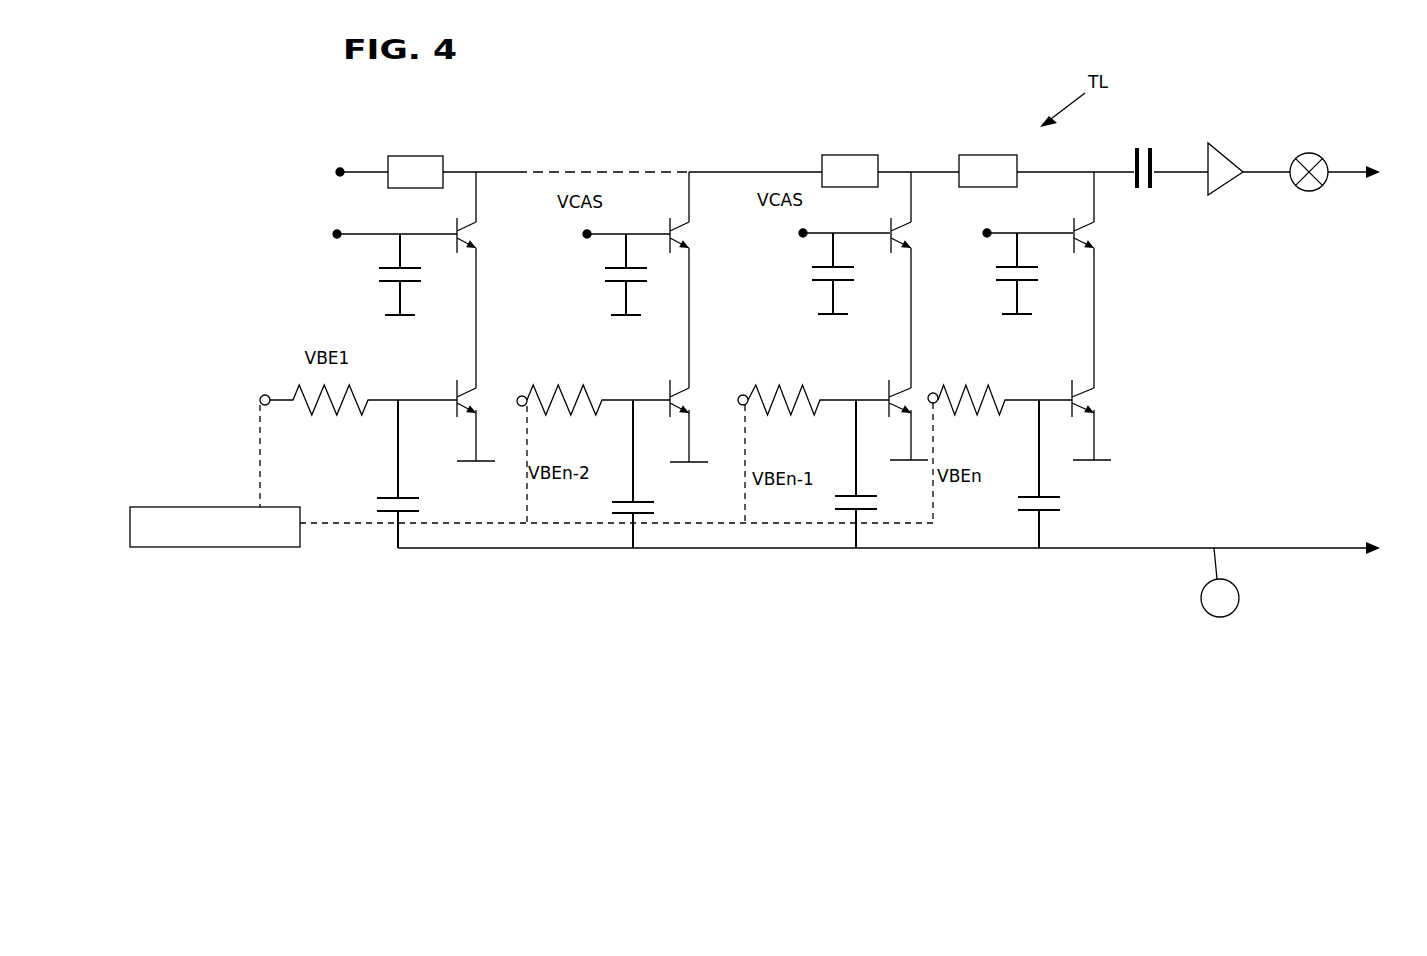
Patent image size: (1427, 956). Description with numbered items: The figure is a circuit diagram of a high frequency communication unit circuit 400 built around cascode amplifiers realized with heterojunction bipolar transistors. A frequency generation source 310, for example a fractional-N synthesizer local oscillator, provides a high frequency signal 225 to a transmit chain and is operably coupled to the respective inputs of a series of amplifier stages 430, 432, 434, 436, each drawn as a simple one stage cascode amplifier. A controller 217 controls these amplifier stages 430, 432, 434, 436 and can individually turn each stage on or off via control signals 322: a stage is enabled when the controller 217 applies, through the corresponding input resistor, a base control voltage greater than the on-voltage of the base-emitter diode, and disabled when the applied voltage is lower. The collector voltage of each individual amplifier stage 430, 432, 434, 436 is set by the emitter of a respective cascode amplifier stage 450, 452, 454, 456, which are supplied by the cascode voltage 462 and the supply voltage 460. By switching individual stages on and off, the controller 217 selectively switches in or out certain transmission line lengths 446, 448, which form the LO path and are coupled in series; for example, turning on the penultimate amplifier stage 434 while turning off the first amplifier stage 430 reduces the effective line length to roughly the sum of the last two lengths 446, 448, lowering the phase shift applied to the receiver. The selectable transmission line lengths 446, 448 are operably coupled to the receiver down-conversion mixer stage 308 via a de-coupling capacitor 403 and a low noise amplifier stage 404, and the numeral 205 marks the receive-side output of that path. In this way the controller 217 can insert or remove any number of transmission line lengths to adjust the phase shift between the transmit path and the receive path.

The high frequency communication unit circuit 400 is at (608, 88).
The supply voltage VCC 460 is at (330, 170).
The cascode voltage VCAS 462 is at (335, 233).
The cascode amplifier stage 450 is at (480, 237).
The cascode amplifier stage 452 is at (683, 235).
The cascode amplifier stage 454 is at (908, 230).
The cascode amplifier stage 456 is at (1097, 232).
The amplifier stage 430 is at (480, 400).
The amplifier stage 432 is at (697, 402).
The amplifier stage 434 is at (915, 395).
The amplifier stage 436 is at (1100, 405).
The transmission line length 446 is at (822, 155).
The transmission line length 448 is at (959, 153).
The de-coupling capacitor 403 is at (1133, 157).
The low noise amplifier stage 404 is at (1207, 148).
The receiver down-conversion mixer stage 308 is at (1310, 150).
The receive output RX 205 is at (1337, 160).
The control signals 322 is at (258, 430).
The controller 217 is at (285, 540).
The frequency generation source 310 is at (1207, 602).
The high frequency signal 225 is at (1318, 553).